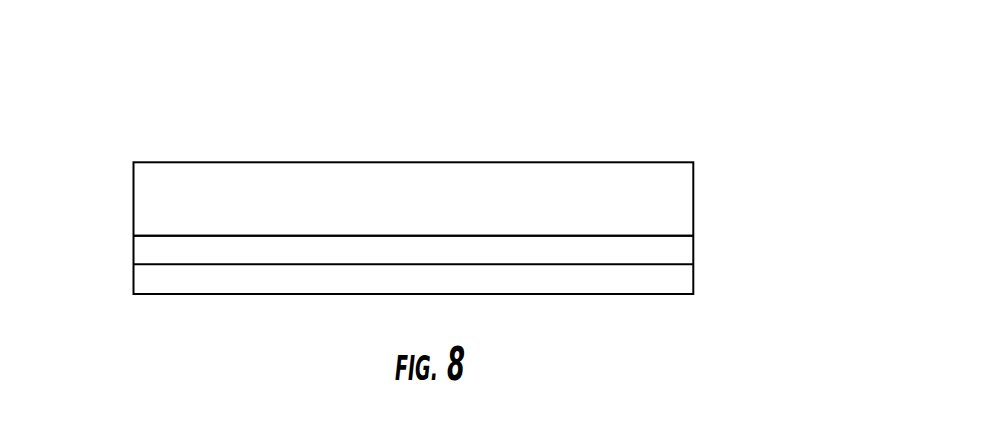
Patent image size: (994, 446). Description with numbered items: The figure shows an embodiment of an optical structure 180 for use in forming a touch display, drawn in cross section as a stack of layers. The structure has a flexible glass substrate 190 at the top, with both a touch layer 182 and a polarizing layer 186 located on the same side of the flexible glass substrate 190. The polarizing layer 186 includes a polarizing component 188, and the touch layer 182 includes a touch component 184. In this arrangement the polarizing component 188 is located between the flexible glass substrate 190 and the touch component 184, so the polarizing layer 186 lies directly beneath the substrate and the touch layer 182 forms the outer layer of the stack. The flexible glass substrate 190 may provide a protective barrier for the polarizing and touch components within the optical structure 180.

The optical structure 180 is at (715, 105).
The touch layer 182 is at (705, 280).
The touch component 184 is at (587, 273).
The polarizing layer 186 is at (706, 248).
The polarizing component 188 is at (182, 243).
The flexible glass substrate 190 is at (386, 172).